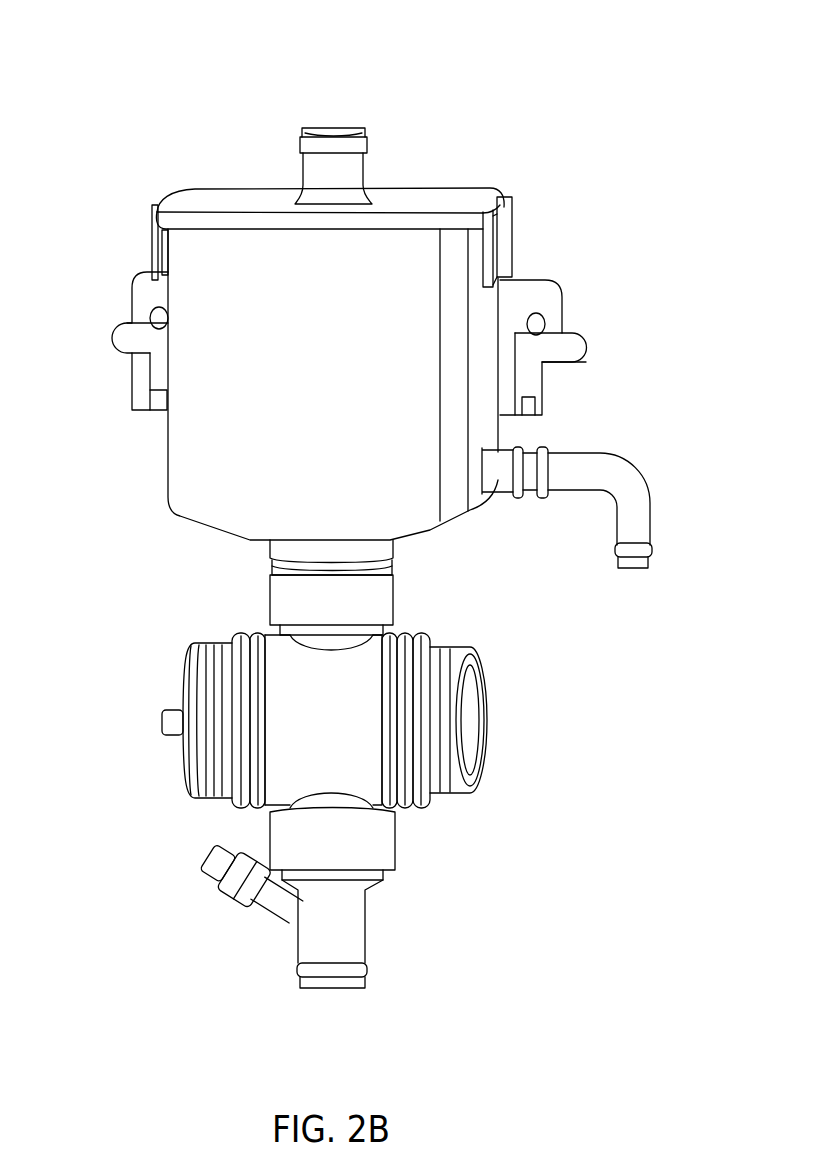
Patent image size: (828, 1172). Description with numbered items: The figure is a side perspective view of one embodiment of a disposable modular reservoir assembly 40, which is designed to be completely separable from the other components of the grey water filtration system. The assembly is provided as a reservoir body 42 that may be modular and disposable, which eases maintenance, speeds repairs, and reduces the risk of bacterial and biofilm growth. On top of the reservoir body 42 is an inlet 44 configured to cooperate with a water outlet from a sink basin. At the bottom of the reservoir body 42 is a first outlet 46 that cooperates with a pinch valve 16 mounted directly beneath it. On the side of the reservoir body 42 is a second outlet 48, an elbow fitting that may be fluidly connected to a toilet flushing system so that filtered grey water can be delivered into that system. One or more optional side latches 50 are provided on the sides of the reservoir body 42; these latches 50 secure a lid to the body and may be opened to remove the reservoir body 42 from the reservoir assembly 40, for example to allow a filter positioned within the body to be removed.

The pinch valve 16 is at (340, 733).
The reservoir assembly 40 is at (562, 168).
The reservoir body 42 is at (340, 352).
The inlet 44 is at (327, 147).
The first outlet 46 is at (298, 550).
The second outlet 48 is at (638, 525).
The side latch 50 is at (153, 250).